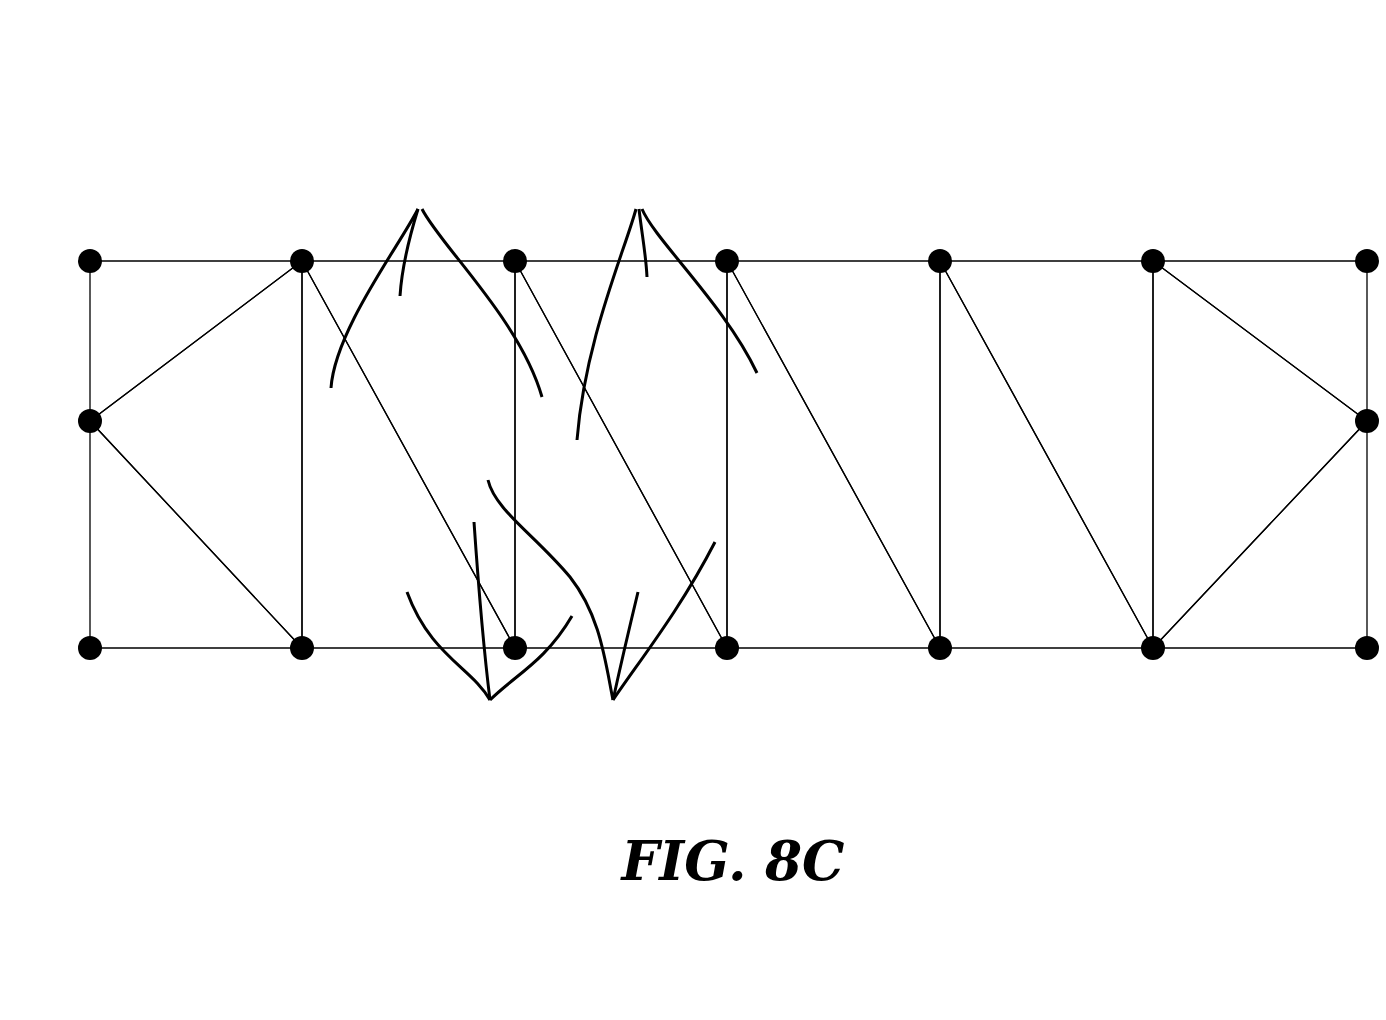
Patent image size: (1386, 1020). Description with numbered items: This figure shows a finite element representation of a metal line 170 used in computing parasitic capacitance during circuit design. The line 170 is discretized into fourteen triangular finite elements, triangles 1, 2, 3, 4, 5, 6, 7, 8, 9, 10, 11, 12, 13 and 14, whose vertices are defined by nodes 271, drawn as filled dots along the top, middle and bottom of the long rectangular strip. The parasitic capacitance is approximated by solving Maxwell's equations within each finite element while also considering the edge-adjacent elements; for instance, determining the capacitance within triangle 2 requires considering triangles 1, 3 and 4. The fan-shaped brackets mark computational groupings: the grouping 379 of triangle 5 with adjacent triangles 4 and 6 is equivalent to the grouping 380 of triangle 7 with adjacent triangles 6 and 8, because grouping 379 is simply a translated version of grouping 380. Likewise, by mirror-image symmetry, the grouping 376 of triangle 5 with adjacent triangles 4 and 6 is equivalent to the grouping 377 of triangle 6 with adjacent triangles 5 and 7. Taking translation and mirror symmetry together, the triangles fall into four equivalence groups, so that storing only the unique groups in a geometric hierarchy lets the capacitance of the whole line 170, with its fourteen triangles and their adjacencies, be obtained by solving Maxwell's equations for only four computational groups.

The line 170 is at (728, 348).
The nodes 271 is at (515, 250).
The grouping 379 is at (419, 212).
The grouping 380 is at (639, 212).
The grouping 376 is at (490, 697).
The grouping 377 is at (613, 697).
The triangle 1 is at (196, 534).
The triangle 2 is at (196, 454).
The triangle 3 is at (196, 341).
The triangle 4 is at (408, 454).
The triangle 5 is at (408, 454).
The triangle 6 is at (621, 454).
The triangle 7 is at (621, 454).
The triangle 8 is at (833, 454).
The triangle 9 is at (833, 454).
The triangle 10 is at (1046, 454).
The triangle 11 is at (1046, 454).
The triangle 12 is at (1260, 454).
The triangle 13 is at (1260, 341).
The triangle 14 is at (1260, 534).